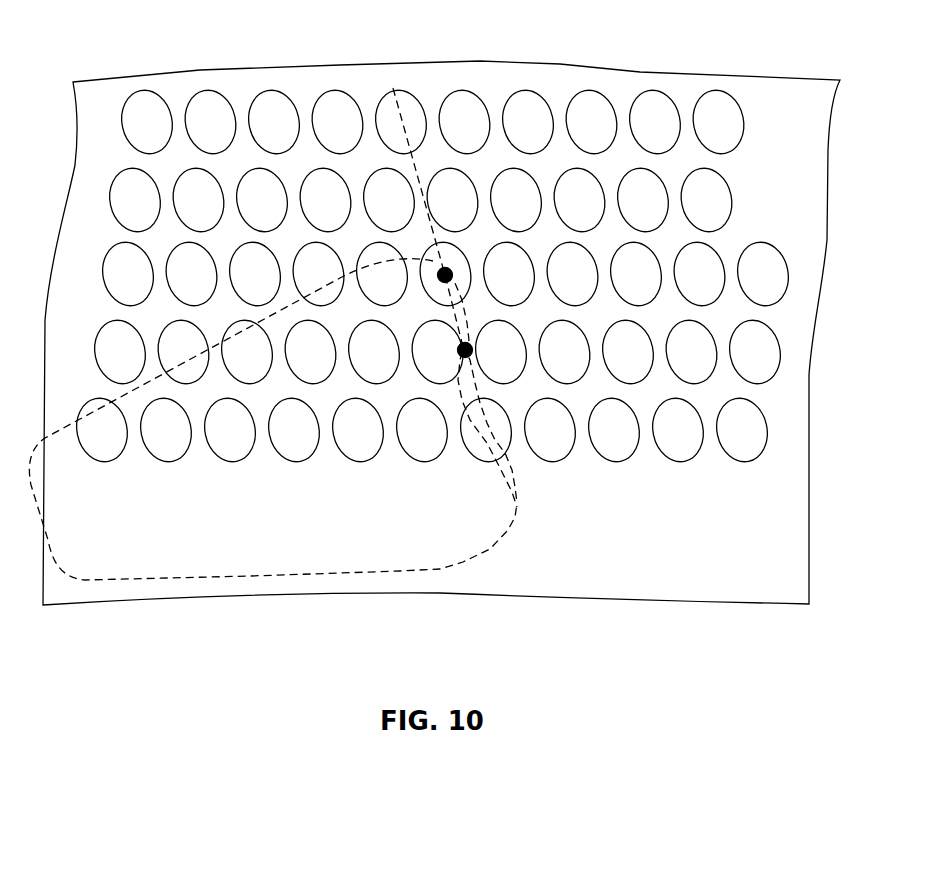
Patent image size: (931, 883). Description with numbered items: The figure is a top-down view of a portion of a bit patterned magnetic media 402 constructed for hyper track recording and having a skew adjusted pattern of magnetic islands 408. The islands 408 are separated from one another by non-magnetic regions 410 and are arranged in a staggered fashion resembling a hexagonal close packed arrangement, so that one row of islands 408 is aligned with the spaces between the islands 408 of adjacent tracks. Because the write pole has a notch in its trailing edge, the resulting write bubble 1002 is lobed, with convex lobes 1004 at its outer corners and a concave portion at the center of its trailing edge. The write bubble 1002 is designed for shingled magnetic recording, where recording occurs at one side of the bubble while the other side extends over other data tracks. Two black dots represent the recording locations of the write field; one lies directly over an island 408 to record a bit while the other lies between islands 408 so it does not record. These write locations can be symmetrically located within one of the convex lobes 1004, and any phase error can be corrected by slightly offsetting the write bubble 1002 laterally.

The patterned magnetic media 402 is at (460, 62).
The magnetic islands 408 is at (272, 112).
The non-magnetic regions 410 is at (370, 113).
The write bubble 1002 is at (512, 529).
The convex lobes 1004 is at (465, 310).